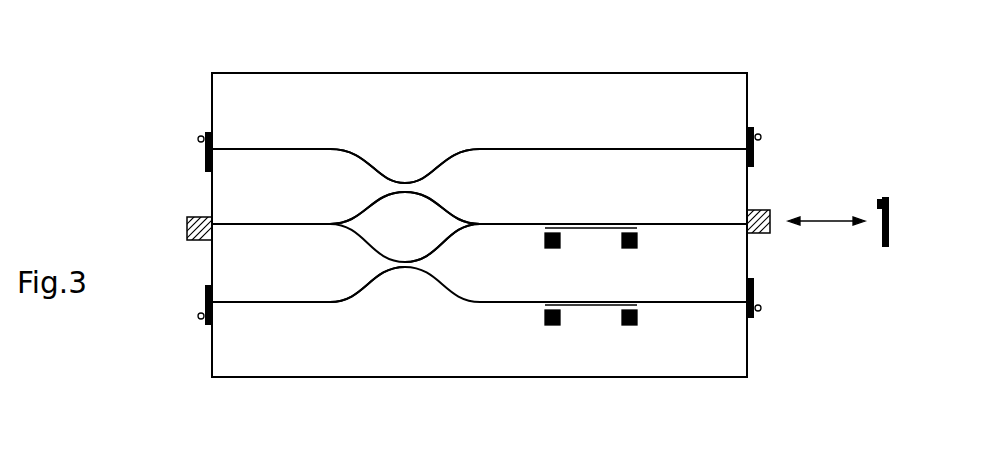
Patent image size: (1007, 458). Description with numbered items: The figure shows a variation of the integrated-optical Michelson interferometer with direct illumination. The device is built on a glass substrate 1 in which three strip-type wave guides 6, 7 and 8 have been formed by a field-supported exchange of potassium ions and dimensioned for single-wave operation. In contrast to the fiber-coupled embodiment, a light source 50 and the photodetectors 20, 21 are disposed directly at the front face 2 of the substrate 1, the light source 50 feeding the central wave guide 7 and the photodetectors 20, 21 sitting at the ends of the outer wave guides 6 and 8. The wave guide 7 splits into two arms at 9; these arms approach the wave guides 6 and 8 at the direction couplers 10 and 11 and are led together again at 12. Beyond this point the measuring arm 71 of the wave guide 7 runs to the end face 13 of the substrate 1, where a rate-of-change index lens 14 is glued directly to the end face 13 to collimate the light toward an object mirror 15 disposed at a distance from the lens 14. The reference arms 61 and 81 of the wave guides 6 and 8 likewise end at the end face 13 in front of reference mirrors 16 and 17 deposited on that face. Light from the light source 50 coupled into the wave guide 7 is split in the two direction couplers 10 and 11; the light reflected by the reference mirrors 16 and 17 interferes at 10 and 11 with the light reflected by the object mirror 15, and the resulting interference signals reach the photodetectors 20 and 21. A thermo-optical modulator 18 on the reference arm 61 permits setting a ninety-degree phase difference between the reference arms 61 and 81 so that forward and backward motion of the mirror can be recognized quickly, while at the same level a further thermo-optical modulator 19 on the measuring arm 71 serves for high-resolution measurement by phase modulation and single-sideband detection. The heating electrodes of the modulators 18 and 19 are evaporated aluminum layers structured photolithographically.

The glass substrate 1 is at (533, 80).
The front face of the substrate 2 is at (212, 100).
The wave guide 6 is at (278, 148).
The reference arm 61 is at (606, 148).
The wave guide 7 is at (262, 222).
The measuring arm 71 is at (655, 222).
The wave guide 8 is at (268, 307).
The reference arm 81 is at (698, 294).
The split of the wave guide 9 is at (325, 232).
The direction coupler 10 is at (408, 182).
The direction coupler 11 is at (405, 275).
The junction of the arms 12 is at (482, 222).
The end face of the substrate 13 is at (748, 88).
The rate-of-change index lens 14 is at (765, 207).
The object mirror 15 is at (878, 242).
The reference mirror 16 is at (754, 130).
The reference mirror 17 is at (754, 290).
The thermo-optical modulator 18 is at (556, 327).
The thermo-optical modulator 19 is at (627, 250).
The photodetector 20 is at (205, 162).
The photodetector 21 is at (205, 294).
The light source 50 is at (187, 230).